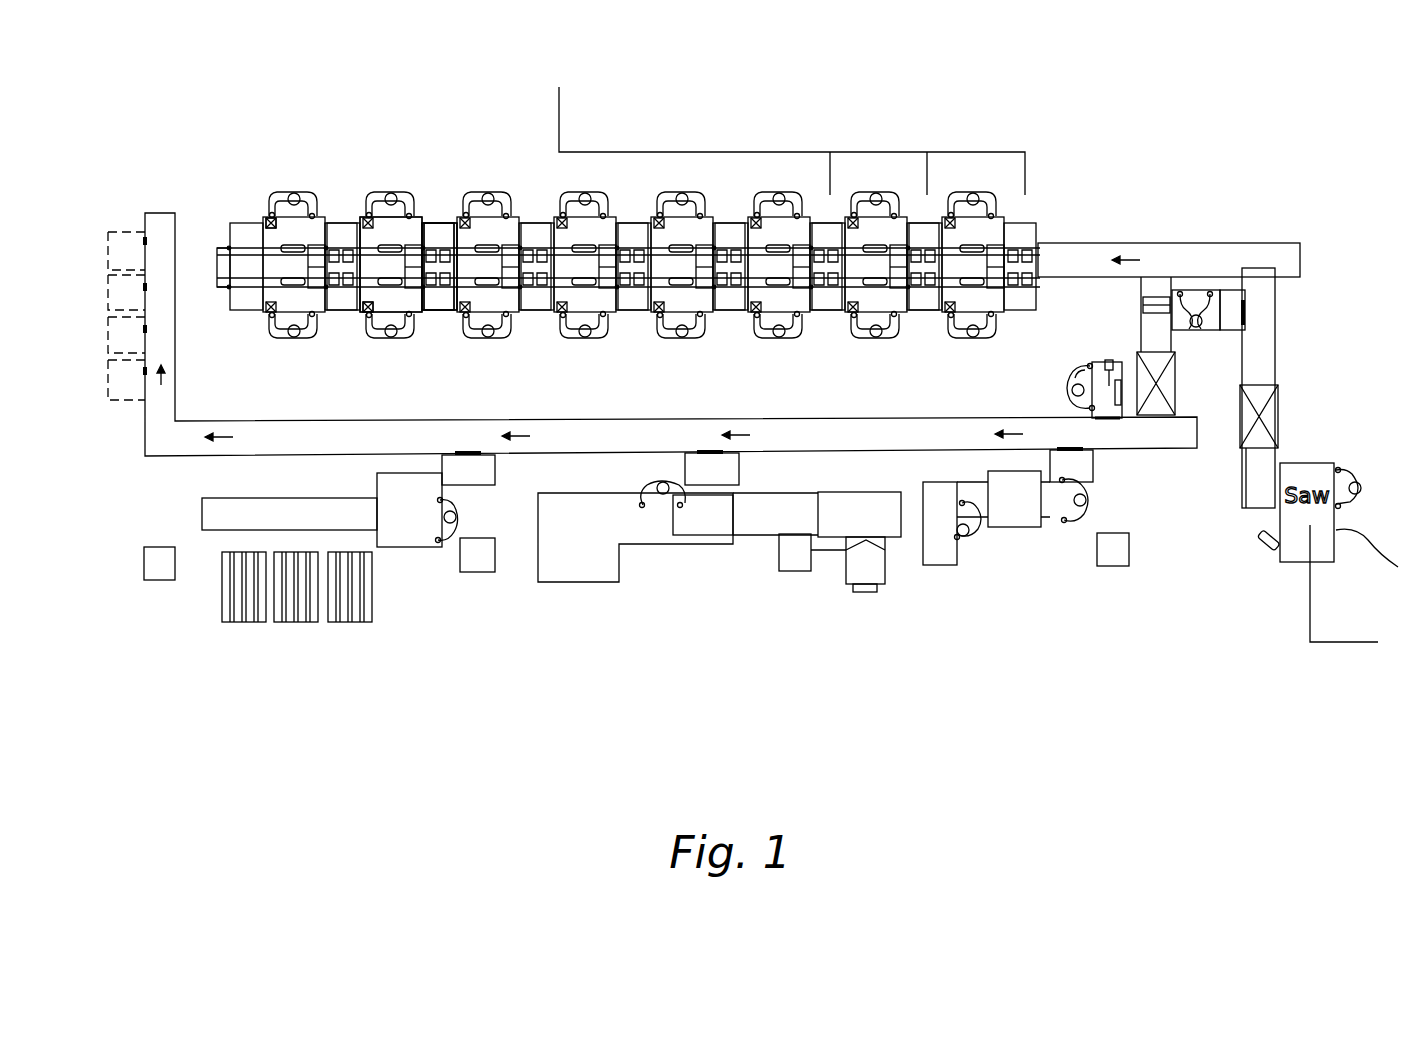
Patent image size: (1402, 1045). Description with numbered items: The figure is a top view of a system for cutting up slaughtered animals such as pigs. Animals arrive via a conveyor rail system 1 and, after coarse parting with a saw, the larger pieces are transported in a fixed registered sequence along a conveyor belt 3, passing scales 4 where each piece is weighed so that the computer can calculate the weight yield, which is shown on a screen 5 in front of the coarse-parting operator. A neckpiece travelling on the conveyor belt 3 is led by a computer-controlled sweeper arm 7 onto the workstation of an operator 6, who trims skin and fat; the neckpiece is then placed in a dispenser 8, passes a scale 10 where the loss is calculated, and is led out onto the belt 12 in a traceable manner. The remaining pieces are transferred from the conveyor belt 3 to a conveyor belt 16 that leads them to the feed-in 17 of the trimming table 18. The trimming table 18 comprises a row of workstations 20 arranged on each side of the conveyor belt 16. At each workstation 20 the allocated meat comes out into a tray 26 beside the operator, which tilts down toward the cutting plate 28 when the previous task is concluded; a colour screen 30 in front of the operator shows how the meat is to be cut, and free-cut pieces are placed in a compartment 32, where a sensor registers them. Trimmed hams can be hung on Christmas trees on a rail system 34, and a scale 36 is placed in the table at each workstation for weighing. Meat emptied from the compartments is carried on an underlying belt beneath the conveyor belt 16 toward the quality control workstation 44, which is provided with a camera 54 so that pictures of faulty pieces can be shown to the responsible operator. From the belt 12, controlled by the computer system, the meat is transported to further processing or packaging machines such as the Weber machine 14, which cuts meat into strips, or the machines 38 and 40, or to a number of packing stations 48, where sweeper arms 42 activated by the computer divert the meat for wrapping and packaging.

The conveyor rail system 1 is at (1310, 622).
The conveyor belt 3 is at (1278, 348).
The scales 4 is at (1278, 410).
The screen 5 is at (1265, 553).
The operator 6 is at (1200, 290).
The sweeper arm 7 is at (1248, 309).
The dispenser 8 is at (1156, 296).
The scale 10 is at (1150, 418).
The belt 12 is at (826, 418).
The Weber machine 14 is at (1012, 568).
The conveyor belt 16 is at (1135, 242).
The feed-in 17 is at (1060, 258).
The trimming table 18 is at (612, 175).
The workstation 20 is at (425, 222).
The tray 26 is at (445, 233).
The cutting plate 28 is at (347, 228).
The colour screen 30 is at (366, 300).
The compartment 32 is at (430, 312).
The rail system 34 is at (883, 152).
The scale 36 is at (268, 222).
The further processing or packaging machine 38 is at (685, 602).
The further processing or packaging machine 40 is at (420, 585).
The sweeper arm 42 is at (472, 452).
The quality control workstation 44 is at (1090, 355).
The packing station 48 is at (108, 286).
The camera 54 is at (1110, 357).